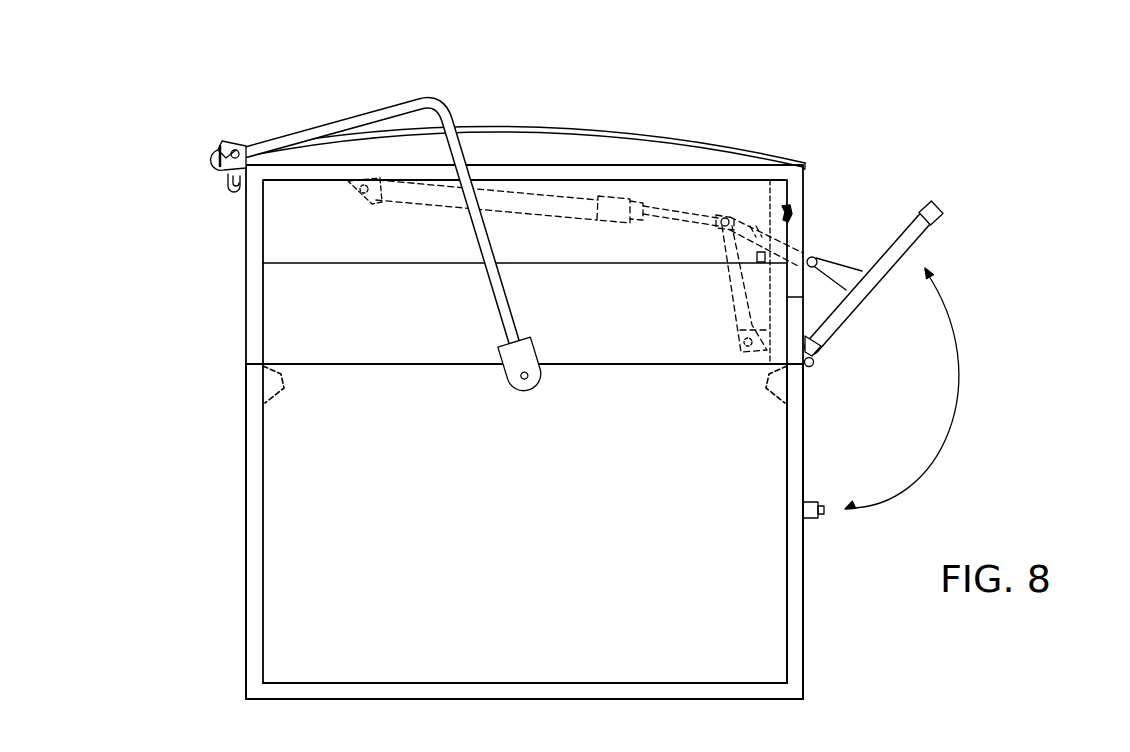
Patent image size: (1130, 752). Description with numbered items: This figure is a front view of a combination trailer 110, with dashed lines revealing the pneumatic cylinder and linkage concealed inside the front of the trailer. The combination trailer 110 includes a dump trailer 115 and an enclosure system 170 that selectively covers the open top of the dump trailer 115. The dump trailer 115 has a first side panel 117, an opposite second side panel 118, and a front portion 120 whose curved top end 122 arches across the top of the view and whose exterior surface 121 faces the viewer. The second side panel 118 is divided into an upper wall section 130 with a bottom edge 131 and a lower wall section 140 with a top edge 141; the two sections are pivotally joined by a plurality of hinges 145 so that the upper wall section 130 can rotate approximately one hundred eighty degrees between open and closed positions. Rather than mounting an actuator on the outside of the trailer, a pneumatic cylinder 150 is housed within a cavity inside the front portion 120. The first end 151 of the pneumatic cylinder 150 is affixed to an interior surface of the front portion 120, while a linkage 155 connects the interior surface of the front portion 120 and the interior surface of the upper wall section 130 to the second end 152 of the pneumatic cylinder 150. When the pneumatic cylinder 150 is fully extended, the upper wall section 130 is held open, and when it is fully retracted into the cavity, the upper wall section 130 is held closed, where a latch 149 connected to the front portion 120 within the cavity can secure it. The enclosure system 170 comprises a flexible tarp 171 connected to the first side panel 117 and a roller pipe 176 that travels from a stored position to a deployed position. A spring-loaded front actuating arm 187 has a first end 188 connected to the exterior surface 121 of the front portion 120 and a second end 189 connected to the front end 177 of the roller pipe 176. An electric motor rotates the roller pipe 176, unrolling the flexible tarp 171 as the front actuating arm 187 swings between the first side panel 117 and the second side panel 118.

The combination trailer 110 is at (995, 106).
The dump trailer 115 is at (163, 537).
The first side panel 117 is at (246, 610).
The second side panel 118 is at (805, 668).
The front portion 120 is at (553, 632).
The exterior surface 121 is at (660, 597).
The curved top end 122 is at (480, 126).
The upper wall section 130 is at (940, 222).
The bottom edge 131 is at (822, 342).
The lower wall section 140 is at (805, 632).
The top edge 141 is at (806, 384).
The hinge 145 is at (816, 362).
The latch 149 is at (793, 213).
The pneumatic cylinder 150 is at (557, 200).
The first end 151 is at (368, 182).
The second end 152 is at (722, 214).
The linkage 155 is at (655, 335).
The enclosure system 170 is at (138, 87).
The flexible tarp 171 is at (221, 140).
The roller pipe 176 is at (218, 157).
The front end 177 is at (226, 170).
The front actuating arm 187 is at (470, 240).
The first end 188 is at (520, 386).
The second end 189 is at (247, 145).